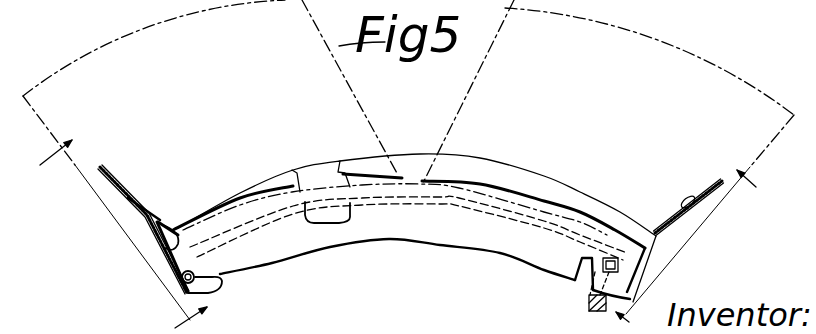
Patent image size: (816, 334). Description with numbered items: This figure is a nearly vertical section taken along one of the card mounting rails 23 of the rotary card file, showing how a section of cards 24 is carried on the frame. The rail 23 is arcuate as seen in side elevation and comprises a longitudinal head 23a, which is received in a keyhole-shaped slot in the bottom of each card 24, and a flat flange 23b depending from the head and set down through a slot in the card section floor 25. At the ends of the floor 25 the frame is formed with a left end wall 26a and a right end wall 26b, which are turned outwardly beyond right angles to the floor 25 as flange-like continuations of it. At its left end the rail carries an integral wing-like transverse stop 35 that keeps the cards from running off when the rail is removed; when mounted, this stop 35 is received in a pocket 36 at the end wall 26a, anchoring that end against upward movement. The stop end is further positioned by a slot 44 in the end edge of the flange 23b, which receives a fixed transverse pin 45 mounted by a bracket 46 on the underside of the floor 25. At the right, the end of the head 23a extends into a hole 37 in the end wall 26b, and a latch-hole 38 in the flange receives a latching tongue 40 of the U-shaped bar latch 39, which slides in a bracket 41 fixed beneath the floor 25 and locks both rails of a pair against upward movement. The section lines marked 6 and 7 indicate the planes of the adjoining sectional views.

The section line 6- 6 is at (121, 232).
The section line 7- 7 is at (687, 247).
The rails 23 is at (302, 192).
The longitudinal head 23a is at (440, 128).
The flat flange 23b is at (413, 230).
The cards 24 is at (155, 25).
The card section floor 25 is at (325, 203).
The left end wall 26a is at (122, 180).
The right end wall 26b is at (719, 192).
The transverse stop 35 is at (173, 217).
The pockets 36 is at (163, 217).
The holes 37 is at (659, 237).
The latch-hole 38 is at (621, 265).
The latch 39 is at (609, 302).
The latching tongues 40 is at (625, 284).
The bracket 41 is at (597, 312).
The slot 44 is at (218, 283).
The transverse pin 45 is at (182, 283).
The bracket 46 is at (187, 283).